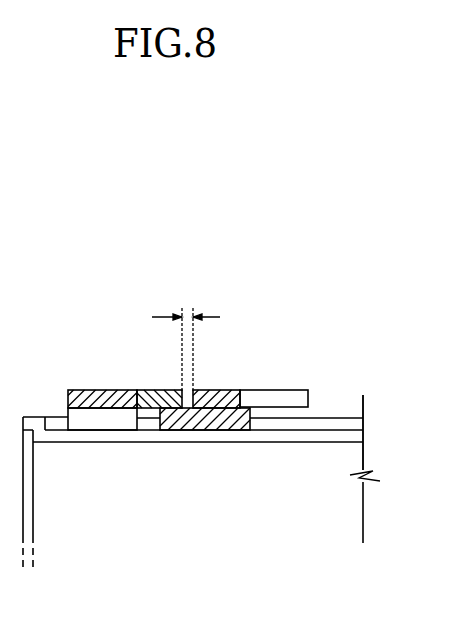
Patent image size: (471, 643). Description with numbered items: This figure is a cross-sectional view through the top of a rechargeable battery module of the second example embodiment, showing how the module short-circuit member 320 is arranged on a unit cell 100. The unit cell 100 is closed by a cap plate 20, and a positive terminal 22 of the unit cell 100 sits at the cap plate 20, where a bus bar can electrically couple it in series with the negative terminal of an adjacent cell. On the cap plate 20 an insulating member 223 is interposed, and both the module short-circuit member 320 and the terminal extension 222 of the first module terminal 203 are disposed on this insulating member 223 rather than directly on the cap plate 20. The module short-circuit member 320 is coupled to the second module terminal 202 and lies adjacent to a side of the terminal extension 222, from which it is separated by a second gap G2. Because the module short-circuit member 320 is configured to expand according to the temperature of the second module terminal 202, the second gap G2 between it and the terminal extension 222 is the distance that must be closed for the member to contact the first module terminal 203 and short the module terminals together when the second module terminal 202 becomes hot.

The cap plate 20 is at (337, 437).
The positive terminal 22 is at (102, 422).
The unit cell 100 is at (337, 503).
The second module terminal 202 is at (97, 398).
The first module terminal 203 is at (250, 370).
The terminal extension 222 is at (215, 390).
The insulating member 223 is at (207, 420).
The module short-circuit member 320 is at (153, 391).
The second gap G2 is at (186, 337).